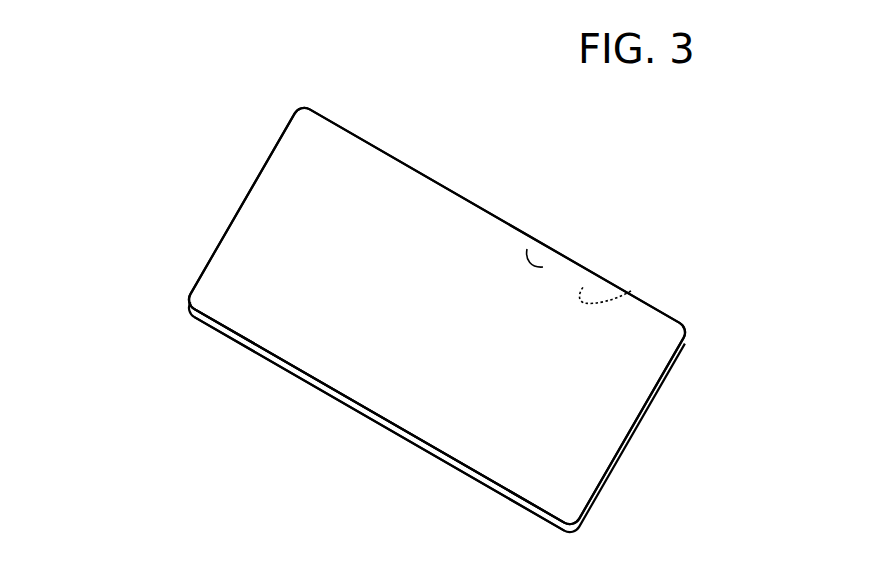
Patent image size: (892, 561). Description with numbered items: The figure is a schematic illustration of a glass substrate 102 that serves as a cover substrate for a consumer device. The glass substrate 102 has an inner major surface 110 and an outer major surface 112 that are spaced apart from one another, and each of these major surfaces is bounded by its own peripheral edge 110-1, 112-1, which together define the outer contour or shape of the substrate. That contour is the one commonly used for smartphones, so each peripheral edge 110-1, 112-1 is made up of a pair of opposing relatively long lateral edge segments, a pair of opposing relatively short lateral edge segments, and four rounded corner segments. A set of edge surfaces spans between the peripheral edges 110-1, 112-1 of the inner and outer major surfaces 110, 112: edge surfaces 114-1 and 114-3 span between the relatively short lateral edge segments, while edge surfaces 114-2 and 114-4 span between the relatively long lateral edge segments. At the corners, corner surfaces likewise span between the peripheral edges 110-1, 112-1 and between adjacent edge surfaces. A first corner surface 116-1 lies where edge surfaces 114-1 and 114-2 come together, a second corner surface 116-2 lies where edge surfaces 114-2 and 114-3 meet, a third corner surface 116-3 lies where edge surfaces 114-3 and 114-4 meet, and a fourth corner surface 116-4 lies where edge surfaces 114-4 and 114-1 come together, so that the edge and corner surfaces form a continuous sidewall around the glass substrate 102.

The glass substrate 102 is at (655, 141).
The inner major surface 110 is at (631, 291).
The peripheral edge 110-1 is at (460, 470).
The outer major surface 112 is at (531, 251).
The peripheral edge 112-1 is at (457, 477).
The edge surface 114-1 is at (627, 447).
The edge surface 114-2 is at (462, 190).
The edge surface 114-3 is at (244, 197).
The edge surface 114-4 is at (396, 432).
The first corner surface 116-1 is at (690, 335).
The second corner surface 116-2 is at (306, 108).
The third corner surface 116-3 is at (183, 309).
The fourth corner surface 116-4 is at (567, 533).